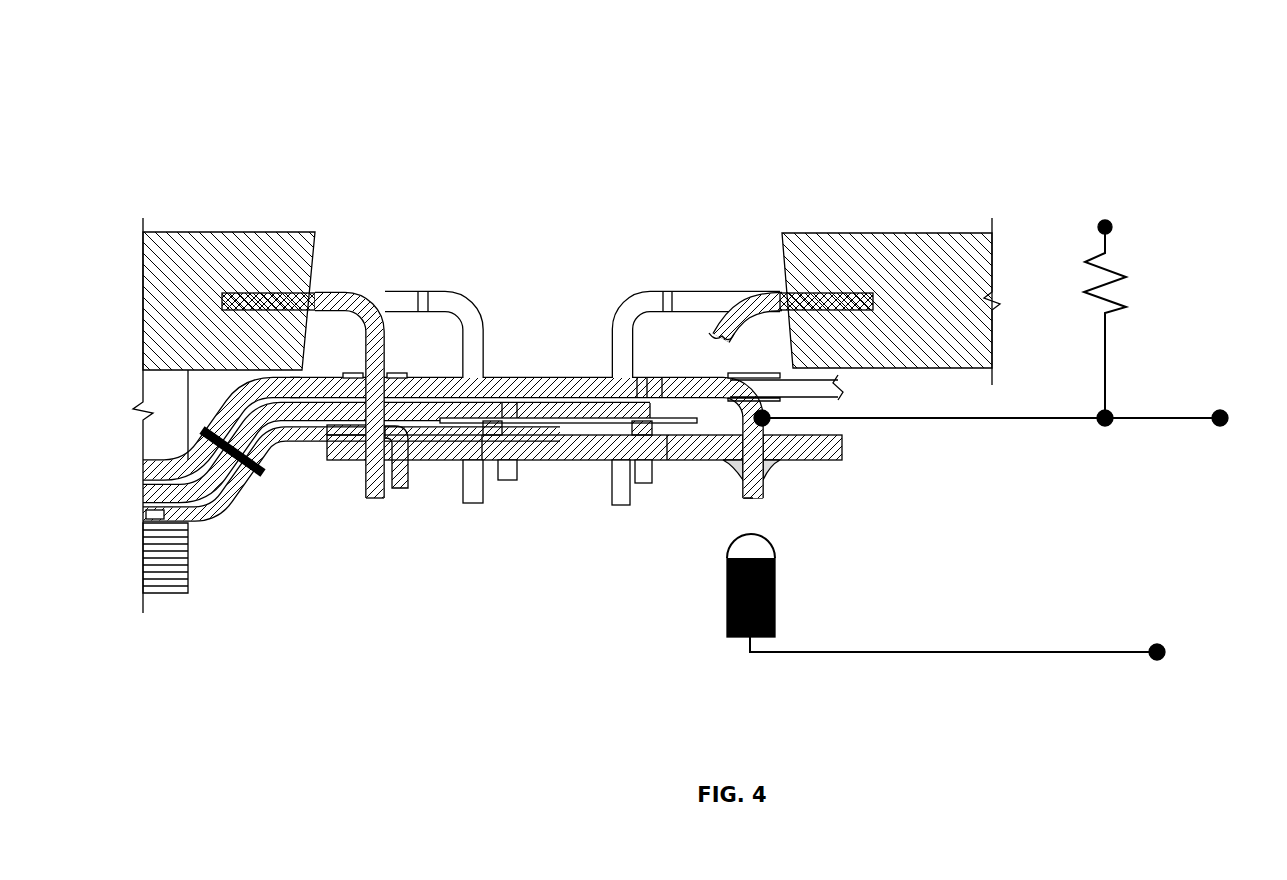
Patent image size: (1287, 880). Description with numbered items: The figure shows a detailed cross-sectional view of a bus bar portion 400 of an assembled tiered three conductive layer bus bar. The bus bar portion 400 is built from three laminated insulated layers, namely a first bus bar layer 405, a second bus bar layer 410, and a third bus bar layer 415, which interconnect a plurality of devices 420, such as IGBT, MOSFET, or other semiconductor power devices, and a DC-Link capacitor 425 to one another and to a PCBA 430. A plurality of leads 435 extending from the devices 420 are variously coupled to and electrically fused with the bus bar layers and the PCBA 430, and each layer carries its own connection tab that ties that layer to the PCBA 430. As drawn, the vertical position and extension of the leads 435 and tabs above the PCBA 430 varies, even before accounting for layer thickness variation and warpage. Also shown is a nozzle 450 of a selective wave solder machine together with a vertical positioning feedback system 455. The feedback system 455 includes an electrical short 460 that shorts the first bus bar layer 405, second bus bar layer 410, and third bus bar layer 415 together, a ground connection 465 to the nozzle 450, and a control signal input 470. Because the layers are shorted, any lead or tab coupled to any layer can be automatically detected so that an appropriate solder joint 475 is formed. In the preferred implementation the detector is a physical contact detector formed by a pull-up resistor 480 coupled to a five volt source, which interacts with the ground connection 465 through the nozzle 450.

The bus bar portion 400 is at (401, 96).
The first bus bar layer 405 is at (580, 385).
The second bus bar layer 410 is at (222, 482).
The third bus bar layer 415 is at (203, 525).
The devices 420 is at (218, 236).
The DC-Link capacitor 425 is at (167, 587).
The PCBA 430 is at (838, 458).
The leads 435 is at (351, 308).
The nozzle 450 is at (775, 585).
The vertical positioning feedback system 455 is at (1097, 542).
The electrical short 460 is at (262, 475).
The ground connection 465 is at (938, 653).
The control signal input 470 is at (1157, 420).
The solder joint 475 is at (772, 470).
The pull-up resistor 480 is at (1122, 278).